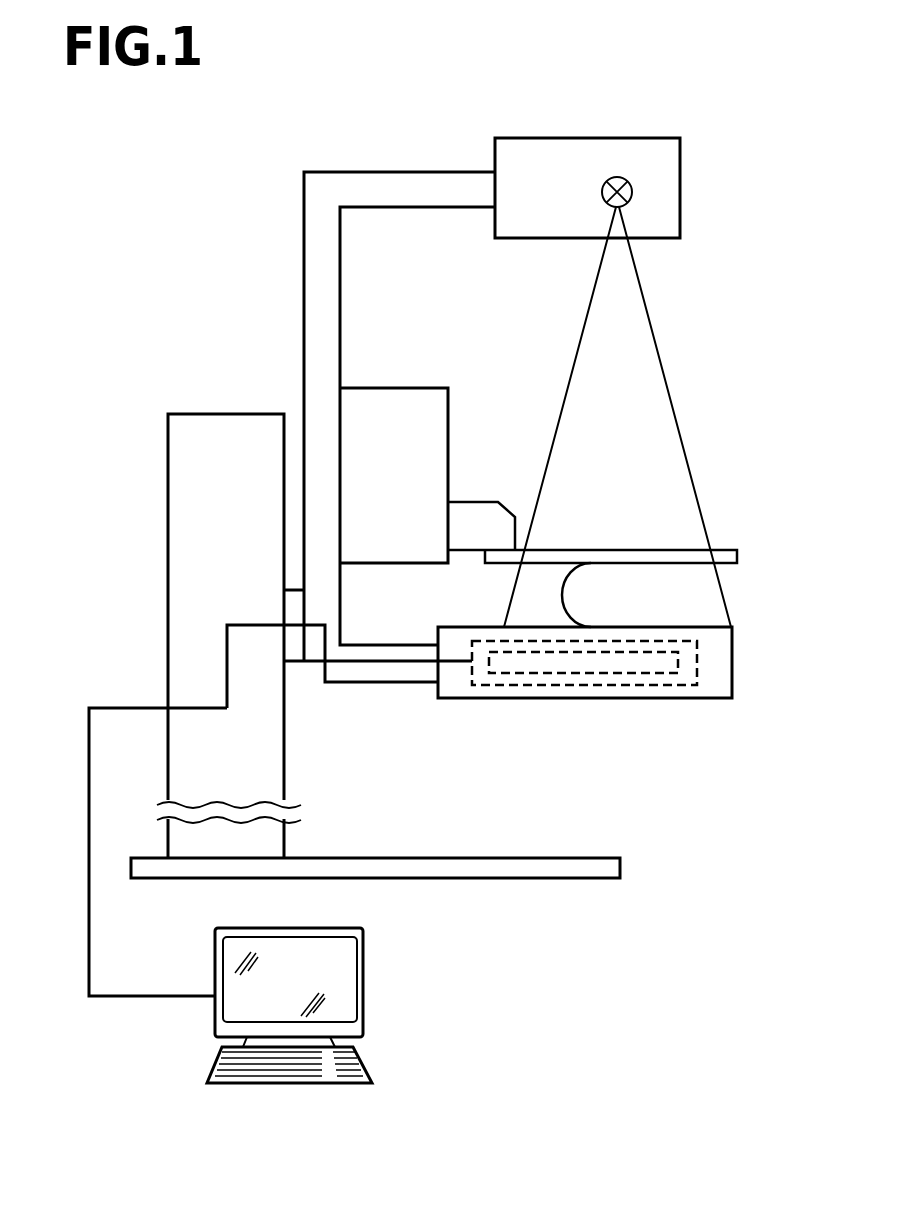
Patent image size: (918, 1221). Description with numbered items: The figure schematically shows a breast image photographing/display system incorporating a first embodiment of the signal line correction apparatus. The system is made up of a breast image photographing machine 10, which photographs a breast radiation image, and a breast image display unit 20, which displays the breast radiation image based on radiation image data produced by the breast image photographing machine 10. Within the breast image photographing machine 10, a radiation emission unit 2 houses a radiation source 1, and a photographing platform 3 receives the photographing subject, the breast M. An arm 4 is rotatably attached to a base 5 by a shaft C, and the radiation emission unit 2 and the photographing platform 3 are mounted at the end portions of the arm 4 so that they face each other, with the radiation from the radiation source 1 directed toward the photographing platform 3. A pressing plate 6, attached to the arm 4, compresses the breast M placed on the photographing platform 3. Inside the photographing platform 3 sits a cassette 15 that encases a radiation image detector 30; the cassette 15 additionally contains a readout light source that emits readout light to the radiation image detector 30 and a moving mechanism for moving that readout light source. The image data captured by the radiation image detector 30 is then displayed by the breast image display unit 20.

The breast image photographing machine 10 is at (719, 74).
The radiation source 1 is at (615, 176).
The radiation emission unit 2 is at (660, 185).
The arm 4 is at (320, 184).
The base 5 is at (178, 472).
The pressing plate 6 is at (621, 553).
The breast M is at (578, 600).
The photographing platform 3 is at (707, 665).
The cassette 15 is at (553, 687).
The radiation image detector 30 is at (645, 674).
The shaft C is at (298, 663).
The breast image display unit 20 is at (364, 950).